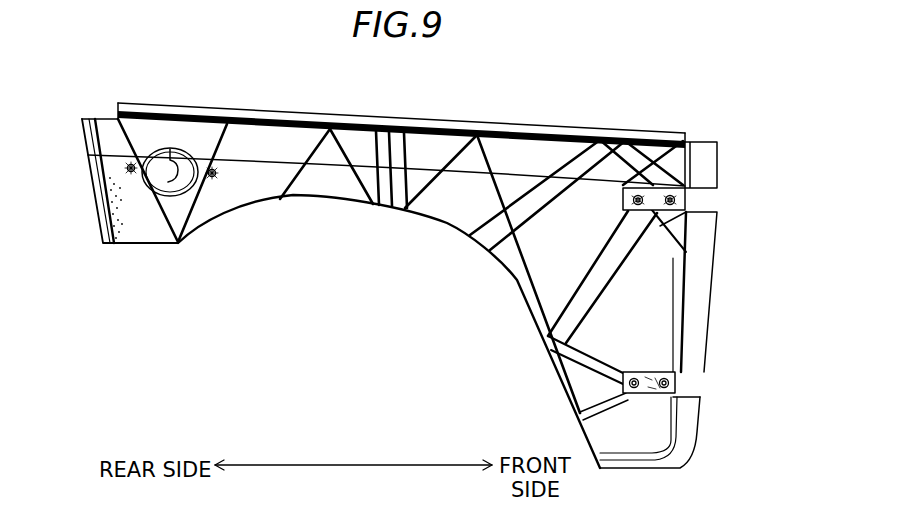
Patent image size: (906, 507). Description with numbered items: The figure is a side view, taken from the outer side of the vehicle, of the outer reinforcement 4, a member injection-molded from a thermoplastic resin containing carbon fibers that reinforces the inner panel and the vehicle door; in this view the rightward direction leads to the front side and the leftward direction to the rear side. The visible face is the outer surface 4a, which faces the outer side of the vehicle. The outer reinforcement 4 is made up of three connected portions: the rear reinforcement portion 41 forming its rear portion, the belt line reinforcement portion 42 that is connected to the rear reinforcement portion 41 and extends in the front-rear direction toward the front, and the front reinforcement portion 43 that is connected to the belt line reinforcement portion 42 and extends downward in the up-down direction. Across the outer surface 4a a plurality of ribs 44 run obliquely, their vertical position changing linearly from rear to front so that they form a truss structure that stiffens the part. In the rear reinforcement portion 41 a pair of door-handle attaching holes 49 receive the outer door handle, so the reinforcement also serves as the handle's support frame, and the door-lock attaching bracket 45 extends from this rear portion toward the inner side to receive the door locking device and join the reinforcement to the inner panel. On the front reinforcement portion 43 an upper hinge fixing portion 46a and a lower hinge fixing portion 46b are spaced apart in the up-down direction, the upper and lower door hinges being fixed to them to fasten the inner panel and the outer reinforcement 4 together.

The outer reinforcement 4 is at (70, 103).
The outer surface 4a is at (332, 187).
The rear reinforcement portion 41 is at (150, 232).
The belt line reinforcement portion 42 is at (425, 142).
The front reinforcement portion 43 is at (665, 307).
The ribs 44 is at (193, 215).
The door-lock attaching bracket 45 is at (112, 214).
The upper hinge fixing portion 46a is at (675, 200).
The lower hinge fixing portion 46b is at (668, 383).
The door-handle attaching holes 49 is at (132, 165).